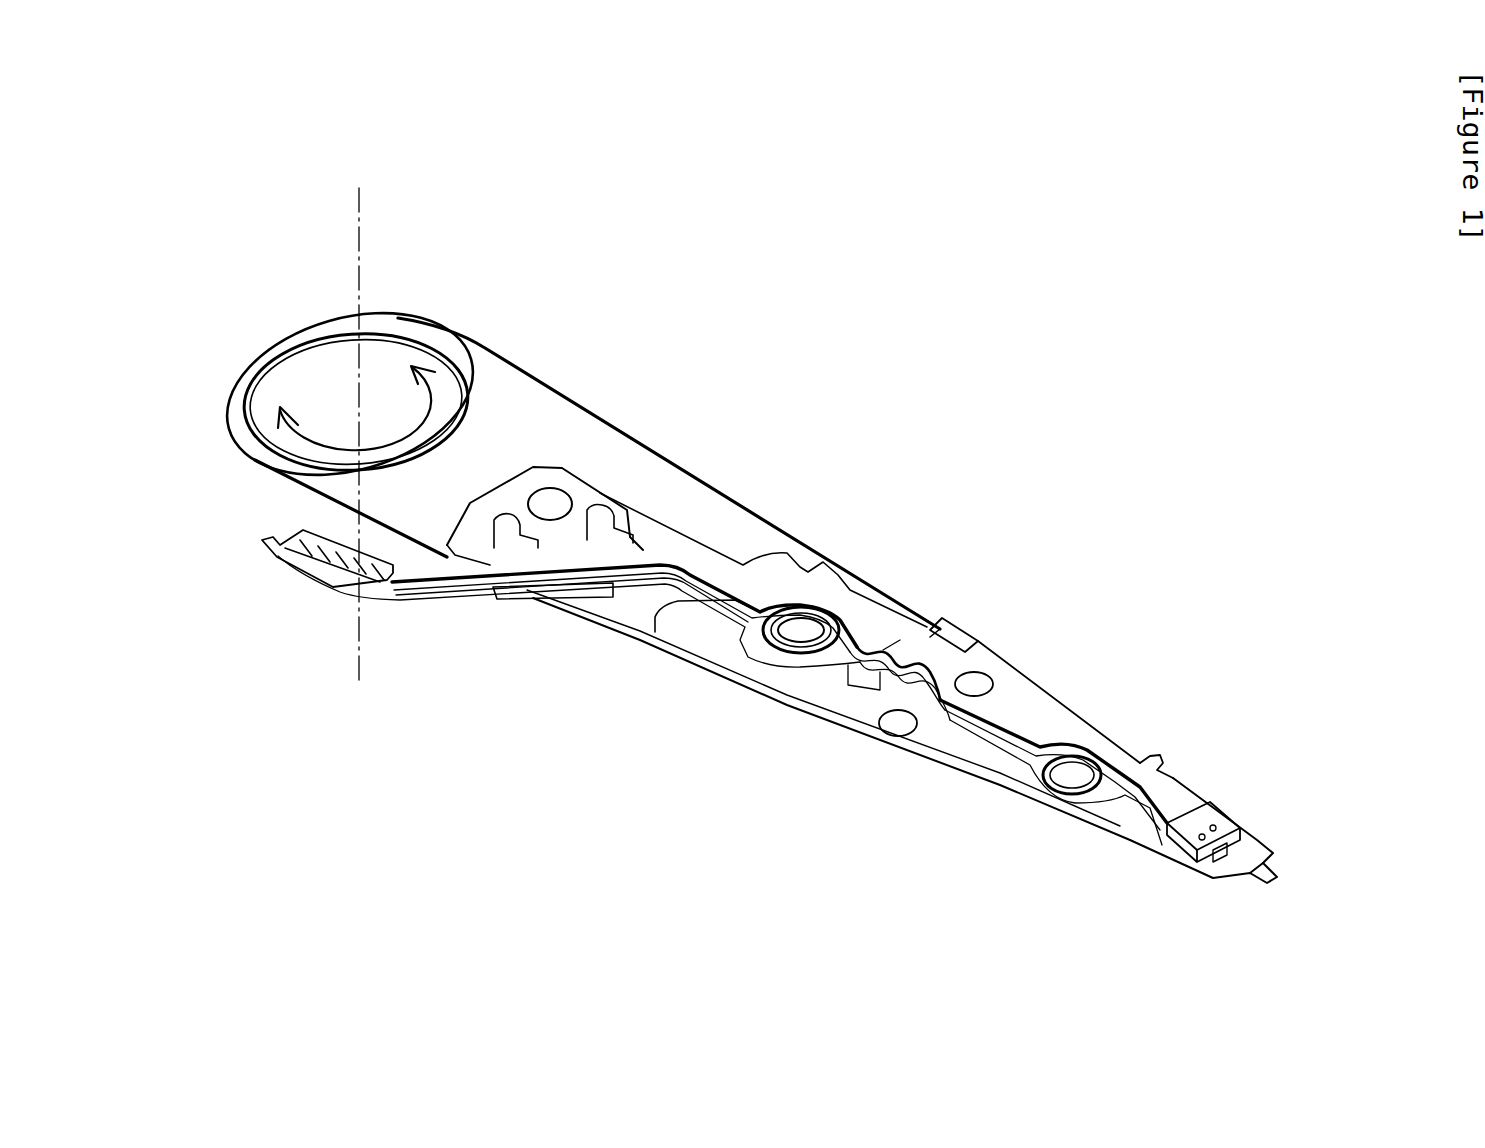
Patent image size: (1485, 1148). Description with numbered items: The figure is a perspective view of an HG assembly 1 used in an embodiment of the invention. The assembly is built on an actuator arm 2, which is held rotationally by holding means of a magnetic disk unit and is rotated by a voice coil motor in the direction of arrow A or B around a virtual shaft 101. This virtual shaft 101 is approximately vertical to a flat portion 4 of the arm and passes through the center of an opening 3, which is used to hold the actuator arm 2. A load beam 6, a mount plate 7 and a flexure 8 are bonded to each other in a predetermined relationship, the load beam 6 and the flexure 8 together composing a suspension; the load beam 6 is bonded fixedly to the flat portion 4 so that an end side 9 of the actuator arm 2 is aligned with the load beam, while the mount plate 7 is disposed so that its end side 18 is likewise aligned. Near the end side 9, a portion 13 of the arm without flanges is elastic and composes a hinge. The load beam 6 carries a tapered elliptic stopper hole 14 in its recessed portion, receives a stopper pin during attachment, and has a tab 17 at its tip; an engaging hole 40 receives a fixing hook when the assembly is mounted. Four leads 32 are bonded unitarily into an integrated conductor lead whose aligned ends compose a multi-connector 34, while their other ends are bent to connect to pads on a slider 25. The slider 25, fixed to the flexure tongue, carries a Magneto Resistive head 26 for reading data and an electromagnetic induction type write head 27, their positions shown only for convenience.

The HG assembly 1 is at (1013, 540).
The actuator arm 2 is at (670, 503).
The opening 3 is at (453, 383).
The flat portion 4 is at (620, 458).
The load beam 6 is at (857, 717).
The mount plate 7 is at (878, 607).
The flexure 8 is at (1023, 705).
The end side 9 is at (862, 662).
The portion close to the end side 13 is at (965, 630).
The tapered elliptic stopper hole 14 is at (1135, 755).
The tab 17 is at (1250, 880).
The end side 18 is at (900, 640).
The slider 25 is at (1188, 818).
The MR head 26 is at (1180, 860).
The write head 27 is at (1217, 827).
The leads 32 is at (1030, 737).
The multi-connector 34 is at (277, 555).
The engaging hole 40 is at (797, 630).
The virtual shaft 101 is at (361, 237).